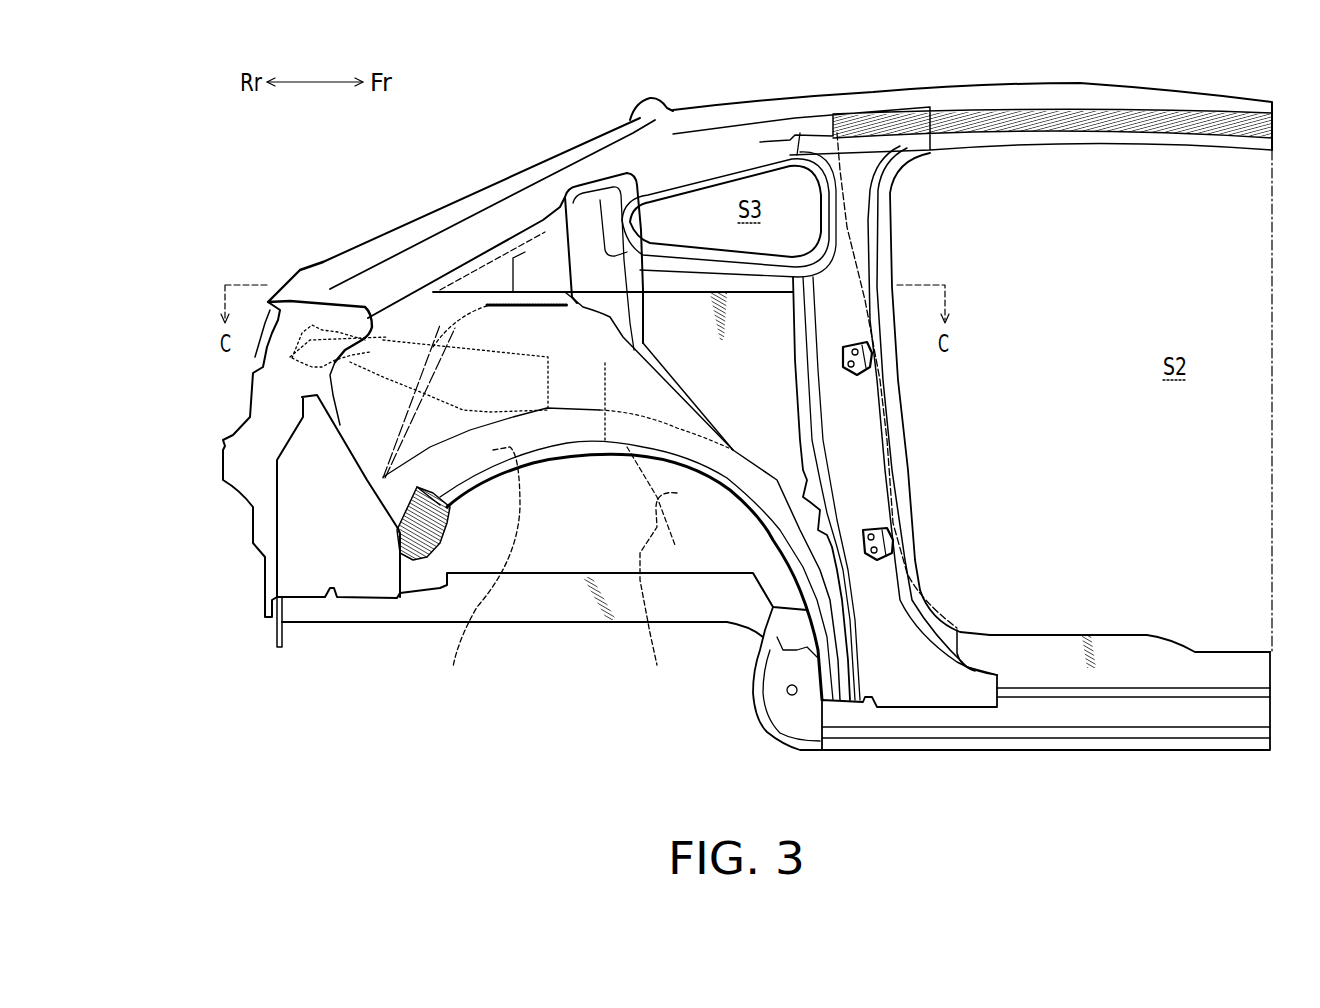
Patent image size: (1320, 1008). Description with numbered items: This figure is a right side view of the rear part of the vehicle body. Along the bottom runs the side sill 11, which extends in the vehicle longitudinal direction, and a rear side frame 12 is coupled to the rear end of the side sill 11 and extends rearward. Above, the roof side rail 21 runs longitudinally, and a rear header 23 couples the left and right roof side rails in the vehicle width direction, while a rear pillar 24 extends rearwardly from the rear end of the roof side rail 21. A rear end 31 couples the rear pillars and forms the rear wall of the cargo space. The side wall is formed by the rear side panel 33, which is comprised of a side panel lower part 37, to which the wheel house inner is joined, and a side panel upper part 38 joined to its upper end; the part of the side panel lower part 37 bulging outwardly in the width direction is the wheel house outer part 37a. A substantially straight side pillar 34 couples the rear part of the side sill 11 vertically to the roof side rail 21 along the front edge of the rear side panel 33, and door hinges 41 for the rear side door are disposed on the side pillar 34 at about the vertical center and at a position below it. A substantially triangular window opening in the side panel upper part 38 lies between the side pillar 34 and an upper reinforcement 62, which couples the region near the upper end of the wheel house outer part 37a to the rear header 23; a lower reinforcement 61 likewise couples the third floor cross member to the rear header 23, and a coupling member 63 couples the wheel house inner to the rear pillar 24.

The side sill 11 is at (1150, 653).
The rear side frame 12 is at (537, 612).
The roof side rail 21 is at (1107, 97).
The rear header 23 is at (637, 113).
The rear pillar 24 is at (450, 241).
The rear end 31 is at (263, 522).
The rear side panel 33 is at (796, 358).
The side pillar 34 is at (861, 225).
The side panel lower part 37 is at (767, 428).
The wheel house outer part 37a is at (453, 660).
The side panel upper part 38 is at (687, 277).
The door hinge 41 is at (857, 367).
The lower reinforcement 61 is at (657, 660).
The upper reinforcement 62 is at (540, 247).
The coupling member 63 is at (388, 350).